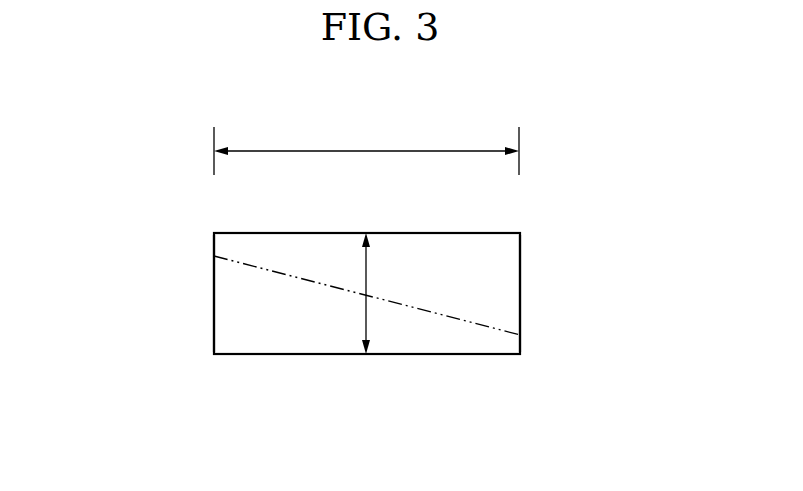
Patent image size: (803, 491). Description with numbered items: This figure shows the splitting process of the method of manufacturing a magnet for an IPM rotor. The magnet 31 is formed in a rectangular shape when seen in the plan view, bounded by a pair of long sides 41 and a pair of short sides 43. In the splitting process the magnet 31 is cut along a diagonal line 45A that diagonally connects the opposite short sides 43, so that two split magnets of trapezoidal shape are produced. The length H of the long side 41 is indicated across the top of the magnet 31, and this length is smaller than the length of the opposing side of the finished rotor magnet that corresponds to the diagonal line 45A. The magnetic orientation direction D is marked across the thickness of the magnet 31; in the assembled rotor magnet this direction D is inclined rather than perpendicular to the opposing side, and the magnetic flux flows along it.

The magnet 31 is at (521, 232).
The long side 41 is at (438, 232).
The short side 43 is at (214, 296).
The diagonal line 45A is at (494, 330).
The magnetic orientation direction D is at (367, 313).
The length of the long side H is at (366, 150).